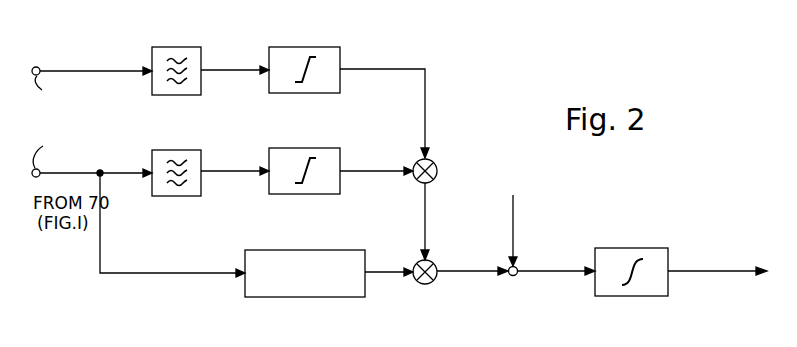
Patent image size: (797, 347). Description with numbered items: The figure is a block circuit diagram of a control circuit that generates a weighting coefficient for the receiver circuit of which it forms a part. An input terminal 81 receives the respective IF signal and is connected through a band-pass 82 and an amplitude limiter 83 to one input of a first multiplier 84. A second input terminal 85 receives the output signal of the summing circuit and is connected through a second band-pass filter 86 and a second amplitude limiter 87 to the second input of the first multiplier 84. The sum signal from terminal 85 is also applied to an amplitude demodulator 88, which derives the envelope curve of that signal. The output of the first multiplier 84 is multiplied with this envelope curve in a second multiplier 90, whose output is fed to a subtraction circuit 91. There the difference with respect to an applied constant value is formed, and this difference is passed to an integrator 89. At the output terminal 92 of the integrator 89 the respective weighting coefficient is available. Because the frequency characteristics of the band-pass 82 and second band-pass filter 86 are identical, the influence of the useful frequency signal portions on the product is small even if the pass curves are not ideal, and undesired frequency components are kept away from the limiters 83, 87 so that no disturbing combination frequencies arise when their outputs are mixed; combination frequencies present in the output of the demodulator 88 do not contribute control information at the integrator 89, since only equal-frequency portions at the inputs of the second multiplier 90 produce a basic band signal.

The input terminal 81 is at (49, 76).
The band-pass 82 is at (176, 59).
The amplitude limiter 83 is at (304, 57).
The first multiplier 84 is at (440, 171).
The second input terminal 85 is at (49, 150).
The second band-pass filter 86 is at (176, 161).
The second amplitude limiter 87 is at (304, 158).
The amplitude demodulator 88 is at (306, 262).
The integrator 89 is at (631, 260).
The second multiplier 90 is at (439, 259).
The subtraction circuit 91 is at (514, 242).
The output terminal 92 is at (717, 247).